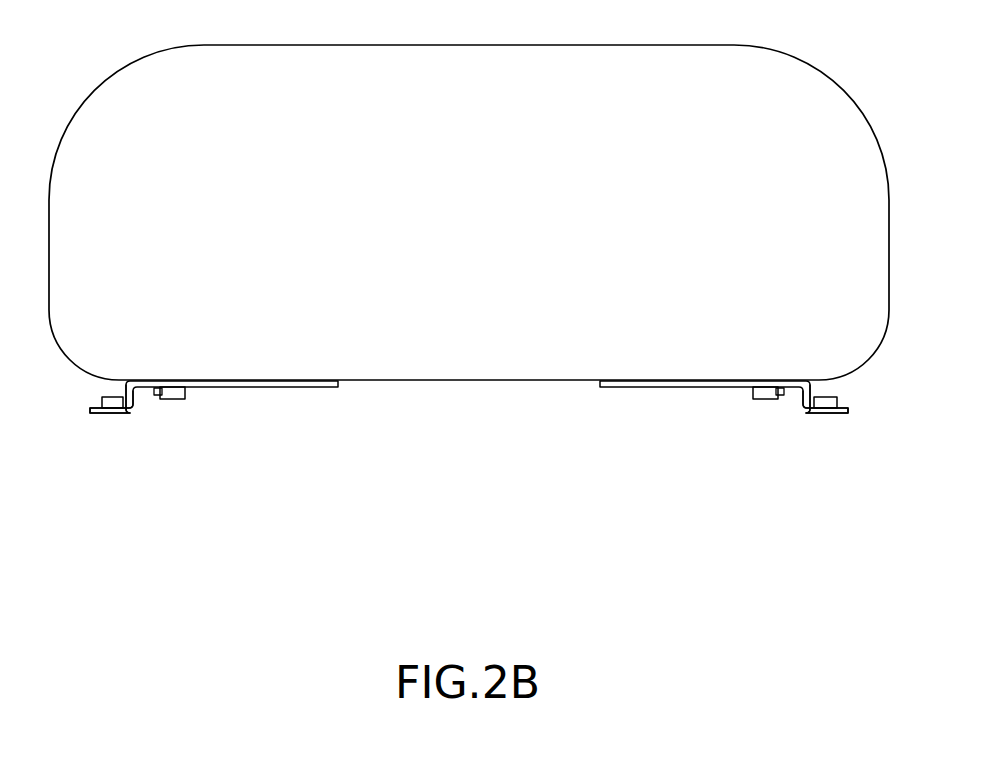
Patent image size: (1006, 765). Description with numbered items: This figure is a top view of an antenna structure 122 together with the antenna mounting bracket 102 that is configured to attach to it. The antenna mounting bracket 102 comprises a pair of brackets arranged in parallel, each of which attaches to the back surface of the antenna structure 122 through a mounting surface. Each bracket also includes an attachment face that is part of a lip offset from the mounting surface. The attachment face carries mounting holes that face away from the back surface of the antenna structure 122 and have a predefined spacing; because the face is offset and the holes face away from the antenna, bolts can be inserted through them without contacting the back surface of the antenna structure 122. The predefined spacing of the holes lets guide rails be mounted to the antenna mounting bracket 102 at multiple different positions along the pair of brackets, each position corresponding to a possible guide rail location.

The antenna mounting bracket 102 is at (424, 547).
The antenna structure 122 is at (889, 208).